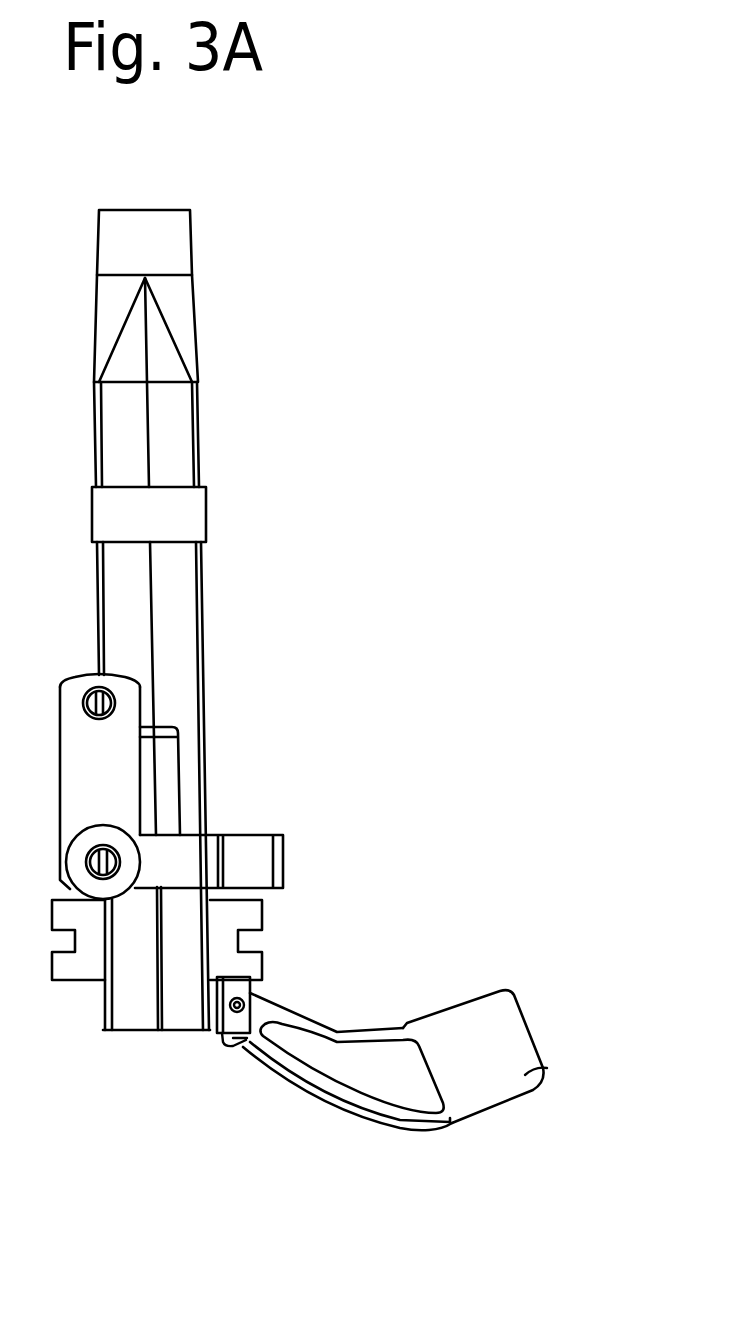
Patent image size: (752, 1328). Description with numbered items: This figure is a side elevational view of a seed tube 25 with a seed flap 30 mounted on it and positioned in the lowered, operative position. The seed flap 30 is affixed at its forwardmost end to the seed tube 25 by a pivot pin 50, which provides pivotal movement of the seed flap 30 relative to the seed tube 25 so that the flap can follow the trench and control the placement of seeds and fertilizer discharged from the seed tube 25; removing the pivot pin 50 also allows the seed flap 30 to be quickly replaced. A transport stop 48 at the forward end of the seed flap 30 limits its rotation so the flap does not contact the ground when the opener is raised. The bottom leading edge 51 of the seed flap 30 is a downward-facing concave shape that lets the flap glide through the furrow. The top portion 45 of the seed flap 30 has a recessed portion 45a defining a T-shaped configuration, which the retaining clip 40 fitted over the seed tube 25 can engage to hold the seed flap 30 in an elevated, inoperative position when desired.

The seed tube 25 is at (202, 422).
The retaining clip 40 is at (248, 835).
The top portion 45 is at (340, 1042).
The recessed portion 45a is at (403, 1060).
The pivot pin 50 is at (253, 1002).
The transport stop 48 is at (228, 1038).
The seed flap 30 is at (547, 1068).
The bottom leading edge 51 is at (332, 1122).